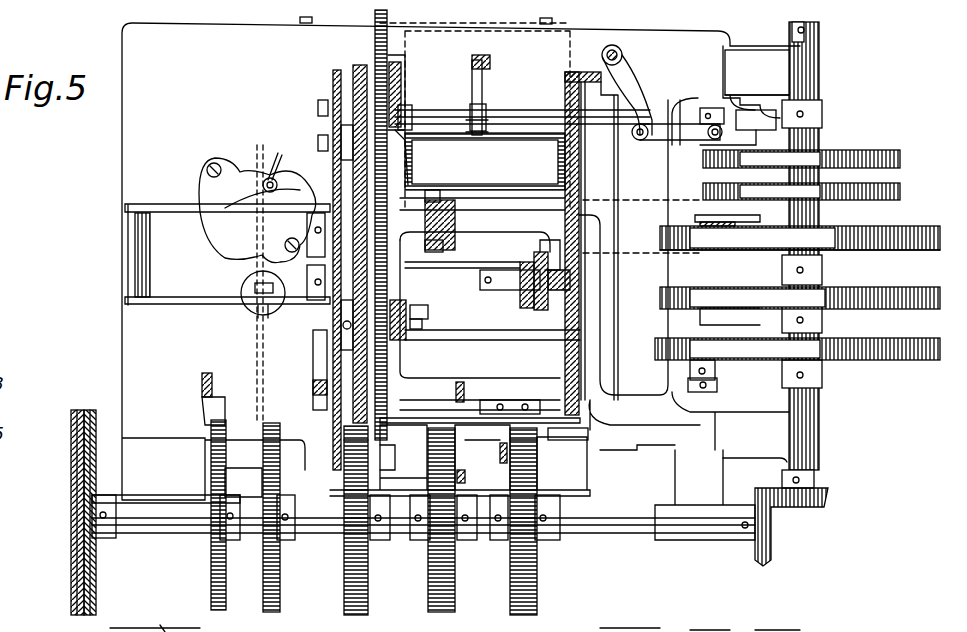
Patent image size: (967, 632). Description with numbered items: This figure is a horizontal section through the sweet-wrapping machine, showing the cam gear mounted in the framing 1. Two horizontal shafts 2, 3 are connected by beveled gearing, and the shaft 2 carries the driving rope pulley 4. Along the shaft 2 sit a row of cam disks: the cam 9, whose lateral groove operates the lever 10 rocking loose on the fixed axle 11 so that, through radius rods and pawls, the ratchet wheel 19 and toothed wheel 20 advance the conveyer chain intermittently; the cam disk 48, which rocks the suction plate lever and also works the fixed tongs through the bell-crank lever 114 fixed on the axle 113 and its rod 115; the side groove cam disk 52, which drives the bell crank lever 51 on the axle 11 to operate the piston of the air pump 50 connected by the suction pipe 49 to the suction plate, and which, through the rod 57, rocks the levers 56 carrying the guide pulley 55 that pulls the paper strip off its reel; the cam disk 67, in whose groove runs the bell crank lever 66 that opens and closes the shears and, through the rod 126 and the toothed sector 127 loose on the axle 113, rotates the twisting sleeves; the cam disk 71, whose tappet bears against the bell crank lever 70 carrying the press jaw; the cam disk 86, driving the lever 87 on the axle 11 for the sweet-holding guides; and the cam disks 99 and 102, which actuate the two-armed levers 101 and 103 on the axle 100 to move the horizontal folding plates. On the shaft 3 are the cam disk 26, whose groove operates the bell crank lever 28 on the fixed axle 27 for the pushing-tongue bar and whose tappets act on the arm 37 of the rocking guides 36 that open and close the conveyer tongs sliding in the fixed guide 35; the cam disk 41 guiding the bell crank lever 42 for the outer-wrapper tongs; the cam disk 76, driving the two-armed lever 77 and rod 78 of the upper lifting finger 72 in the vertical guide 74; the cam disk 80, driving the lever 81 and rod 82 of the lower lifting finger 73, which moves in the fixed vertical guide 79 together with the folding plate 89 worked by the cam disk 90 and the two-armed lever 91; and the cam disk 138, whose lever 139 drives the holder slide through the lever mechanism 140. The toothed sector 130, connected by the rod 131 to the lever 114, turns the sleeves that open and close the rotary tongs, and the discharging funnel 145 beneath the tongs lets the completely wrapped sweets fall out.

The framing 1 is at (565, 384).
The horizontal shaft 2 is at (402, 535).
The horizontal shaft 3 is at (812, 393).
The driving rope pulley 4 is at (69, 560).
The cam 9 is at (510, 595).
The lever 10 is at (568, 448).
The axle 11 is at (310, 535).
The ratchet wheel 19 is at (525, 308).
The toothed wheel 20 is at (540, 310).
The cam disk 26 is at (895, 310).
The fixed axle 27 is at (720, 396).
The bell crank lever 28 is at (700, 312).
The fixed horizontal guide 35 is at (777, 622).
The rocking guides 36 is at (385, 622).
The arm 37 is at (710, 624).
The side groove cam disk 41 is at (895, 228).
The bell crank lever 42 is at (695, 218).
The cam disk 48 is at (348, 578).
The suction pipe 49 is at (215, 185).
The air pump 50 is at (250, 158).
The bell crank lever 51 is at (255, 335).
The side groove cam disk 52 is at (272, 440).
The guide pulley 55 is at (128, 246).
The levers 56 is at (160, 297).
The rod 57 is at (252, 290).
The bell crank lever 66 is at (393, 457).
The cam disk 67 is at (368, 578).
The bell crank lever 70 is at (202, 402).
The cam disk 71 is at (211, 572).
The upper lifting finger 72 is at (460, 284).
The lower lifting finger 73 is at (435, 250).
The vertical guide 74 is at (400, 340).
The cam disk 76 is at (897, 362).
The two-armed lever 77 is at (450, 330).
The rod 78 is at (428, 312).
The fixed vertical guide 79 is at (455, 215).
The cam disk 80 is at (900, 252).
The lever 81 is at (520, 245).
The rod 82 is at (445, 250).
The cam disk 86 is at (455, 576).
The lever 87 is at (465, 475).
The folding plate 89 is at (417, 200).
The cam disk 90 is at (890, 196).
The two-armed lever 91 is at (512, 197).
The cam disk 99 is at (428, 585).
The axle 100 is at (605, 405).
The two-armed lever 101 is at (420, 415).
The cam disk 102 is at (537, 580).
The two-armed lever 103 is at (500, 410).
The axle 113 is at (530, 110).
The bell-crank lever 114 is at (388, 58).
The rod 115 is at (490, 60).
The rod 126 is at (390, 185).
The toothed sector 127 is at (375, 40).
The toothed sector 130 is at (318, 142).
The rod 131 is at (318, 108).
The cam disk 138 is at (893, 146).
The lever 139 is at (760, 145).
The lever mechanism 140 is at (640, 62).
The discharging funnel 145 is at (420, 130).